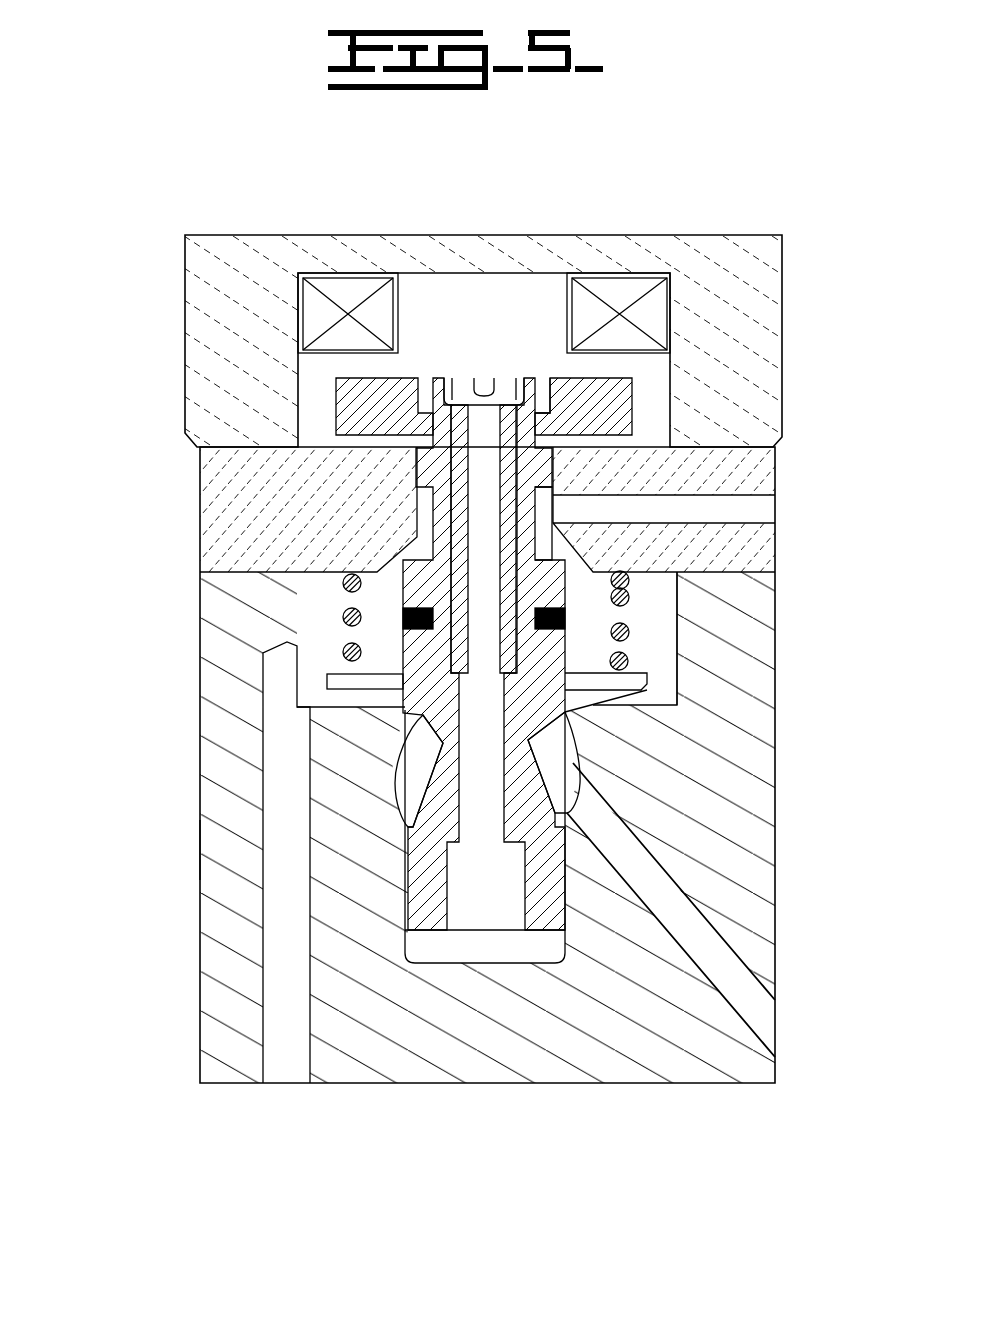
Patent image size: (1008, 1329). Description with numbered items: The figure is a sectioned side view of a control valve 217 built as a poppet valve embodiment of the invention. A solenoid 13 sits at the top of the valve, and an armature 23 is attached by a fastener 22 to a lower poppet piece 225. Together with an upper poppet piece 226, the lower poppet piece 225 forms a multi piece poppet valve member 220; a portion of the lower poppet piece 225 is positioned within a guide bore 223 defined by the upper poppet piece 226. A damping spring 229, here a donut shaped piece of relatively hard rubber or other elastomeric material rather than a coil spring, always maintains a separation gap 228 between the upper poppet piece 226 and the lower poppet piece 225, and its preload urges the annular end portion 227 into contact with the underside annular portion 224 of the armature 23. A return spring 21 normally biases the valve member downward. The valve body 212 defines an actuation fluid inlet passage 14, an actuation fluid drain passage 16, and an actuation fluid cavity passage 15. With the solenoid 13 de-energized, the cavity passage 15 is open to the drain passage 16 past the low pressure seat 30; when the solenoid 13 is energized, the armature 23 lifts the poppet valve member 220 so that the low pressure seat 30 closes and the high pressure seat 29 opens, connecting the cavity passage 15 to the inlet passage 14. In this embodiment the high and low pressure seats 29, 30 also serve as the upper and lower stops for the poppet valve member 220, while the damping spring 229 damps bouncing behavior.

The solenoid 13 is at (340, 276).
The fastener 22 is at (481, 378).
The armature 23 is at (340, 404).
The annular end portion 227 is at (540, 427).
The underside annular portion 224 is at (418, 440).
The guide bore 223 is at (524, 498).
The actuation fluid drain passage 16 is at (748, 522).
The upper poppet piece 226 is at (433, 519).
The return spring 21 is at (343, 614).
The low pressure seat 30 is at (677, 614).
The damping spring 229 is at (566, 621).
The high pressure seat 29 is at (405, 708).
The multi piece poppet valve member 220 is at (628, 708).
The separation gap 228 is at (435, 641).
The lower poppet piece 225 is at (545, 781).
The control valve 217 is at (192, 853).
The housing 212 is at (201, 946).
The actuation fluid inlet passage 14 is at (743, 1022).
The actuation fluid cavity passage 15 is at (264, 1058).